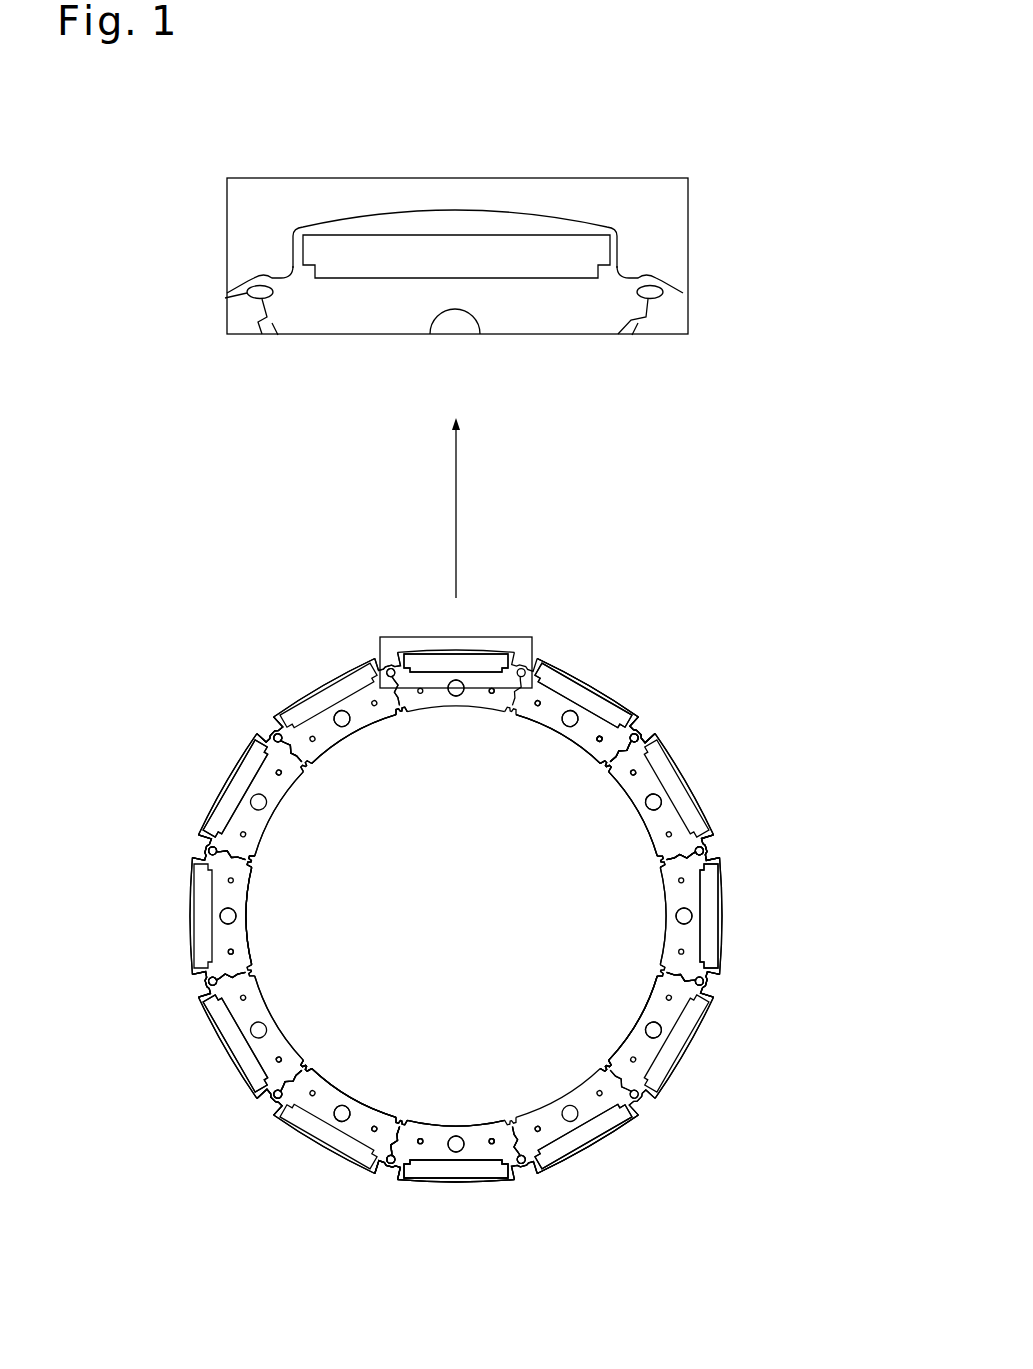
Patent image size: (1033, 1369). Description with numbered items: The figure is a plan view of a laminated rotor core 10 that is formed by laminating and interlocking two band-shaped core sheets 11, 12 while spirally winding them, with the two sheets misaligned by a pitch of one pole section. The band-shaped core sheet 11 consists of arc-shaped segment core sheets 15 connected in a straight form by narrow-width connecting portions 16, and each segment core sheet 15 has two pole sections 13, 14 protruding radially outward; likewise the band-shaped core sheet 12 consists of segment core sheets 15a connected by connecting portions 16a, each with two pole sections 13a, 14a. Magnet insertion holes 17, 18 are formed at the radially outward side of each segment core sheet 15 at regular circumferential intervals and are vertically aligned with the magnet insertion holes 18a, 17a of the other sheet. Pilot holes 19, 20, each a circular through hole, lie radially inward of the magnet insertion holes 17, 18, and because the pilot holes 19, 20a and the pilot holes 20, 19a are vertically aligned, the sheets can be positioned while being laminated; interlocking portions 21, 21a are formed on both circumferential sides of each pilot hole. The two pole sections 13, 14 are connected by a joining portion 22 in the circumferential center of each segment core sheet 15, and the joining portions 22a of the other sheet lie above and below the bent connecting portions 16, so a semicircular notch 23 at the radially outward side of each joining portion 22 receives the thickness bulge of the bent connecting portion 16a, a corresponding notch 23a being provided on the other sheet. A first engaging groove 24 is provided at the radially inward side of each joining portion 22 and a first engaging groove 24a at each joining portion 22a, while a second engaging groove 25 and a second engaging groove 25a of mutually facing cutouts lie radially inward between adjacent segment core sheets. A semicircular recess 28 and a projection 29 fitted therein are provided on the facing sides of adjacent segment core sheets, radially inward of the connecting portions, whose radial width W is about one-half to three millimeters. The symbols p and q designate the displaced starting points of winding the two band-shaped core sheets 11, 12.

The laminated rotor core 10 is at (688, 545).
The band-shaped core sheet 11 is at (425, 1208).
The band-shaped core sheet 12 is at (607, 677).
The pole section 13 is at (454, 222).
The pole section 13a is at (567, 677).
The pole section 14 is at (322, 684).
The pole section 14a is at (683, 797).
The segment core sheet 15 is at (545, 205).
The segment core sheet 15a is at (706, 802).
The connecting portion 16 is at (276, 272).
The connecting portion 16a is at (646, 272).
The magnet insertion hole 17 is at (398, 252).
The magnet insertion hole 17a is at (521, 710).
The magnet insertion hole 18 is at (375, 684).
The magnet insertion hole 18a is at (683, 797).
The pilot hole 19 is at (454, 697).
The pilot hole 19a is at (598, 742).
The pilot hole 20 is at (345, 725).
The pilot hole 20a is at (654, 810).
The interlocking portion 21 is at (490, 695).
The interlocking portion 21a is at (633, 778).
The joining portion 22 is at (228, 773).
The joining portion 22a is at (676, 760).
The notch 23 is at (622, 258).
The notch 23a is at (654, 737).
The first engaging groove 24 is at (306, 767).
The first engaging groove 24a is at (605, 767).
The second engaging groove 25 is at (400, 710).
The second engaging groove 25a is at (662, 862).
The recess 28 is at (260, 338).
The projection 29 is at (272, 322).
The width of connecting portion W is at (258, 279).
The winding starting point p is at (553, 1155).
The winding starting point q is at (510, 680).